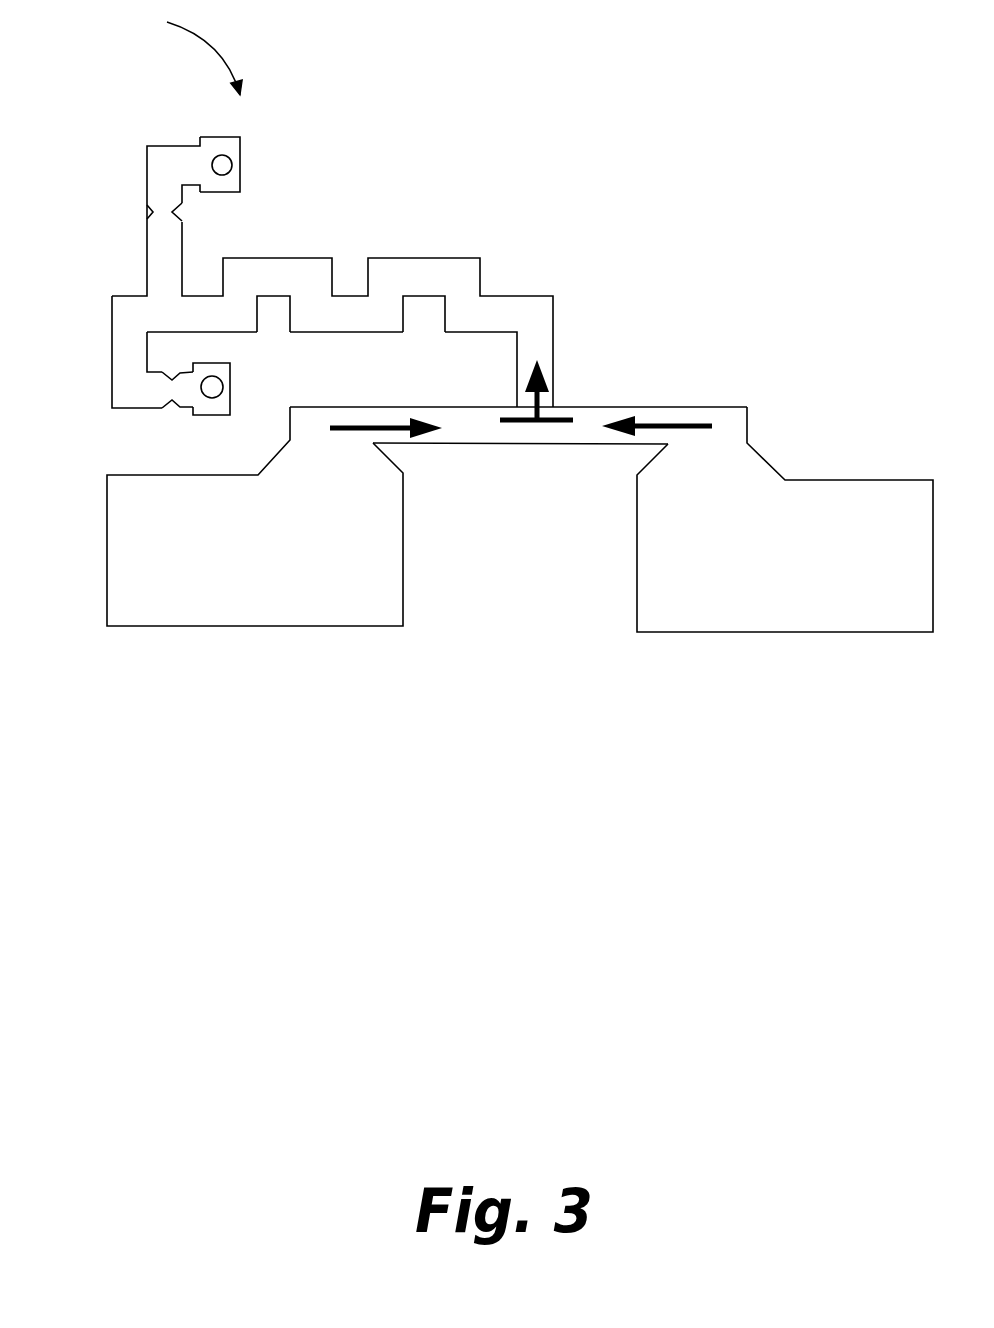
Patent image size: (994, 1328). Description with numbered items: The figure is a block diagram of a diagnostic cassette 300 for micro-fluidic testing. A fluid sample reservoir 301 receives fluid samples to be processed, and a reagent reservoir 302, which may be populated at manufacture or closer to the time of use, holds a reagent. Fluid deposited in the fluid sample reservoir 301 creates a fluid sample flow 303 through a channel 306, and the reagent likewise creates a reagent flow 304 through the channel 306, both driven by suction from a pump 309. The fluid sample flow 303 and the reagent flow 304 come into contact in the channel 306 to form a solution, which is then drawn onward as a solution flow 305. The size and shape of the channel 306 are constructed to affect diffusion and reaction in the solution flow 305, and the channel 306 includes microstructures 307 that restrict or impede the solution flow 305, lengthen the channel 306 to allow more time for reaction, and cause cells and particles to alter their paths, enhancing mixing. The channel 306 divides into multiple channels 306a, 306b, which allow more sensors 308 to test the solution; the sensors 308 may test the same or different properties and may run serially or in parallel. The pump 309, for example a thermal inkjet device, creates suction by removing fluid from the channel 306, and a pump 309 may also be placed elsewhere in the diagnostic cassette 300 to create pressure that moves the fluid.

The diagnostic cassette 300 is at (178, 51).
The fluid sample reservoir 301 is at (255, 516).
The reagent reservoir 302 is at (653, 519).
The fluid sample flow 303 is at (368, 428).
The reagent flow 304 is at (663, 425).
The solution flow 305 is at (543, 415).
The channel 306 is at (537, 316).
The first divided channel 306a is at (165, 267).
The second divided channel 306b is at (133, 377).
The microstructures 307 is at (273, 313).
The sensors 308 is at (167, 212).
The pump 309 is at (222, 165).